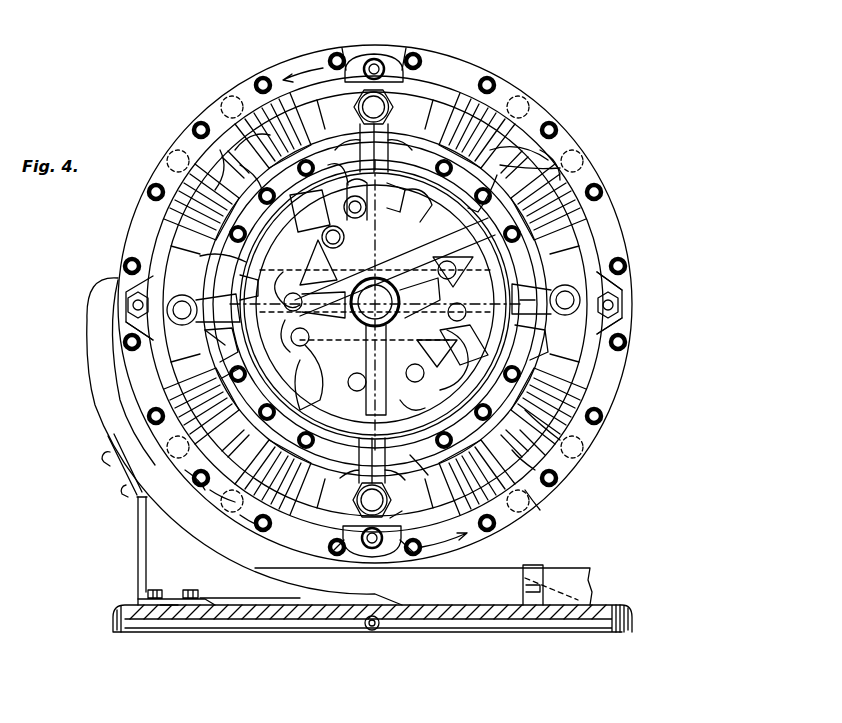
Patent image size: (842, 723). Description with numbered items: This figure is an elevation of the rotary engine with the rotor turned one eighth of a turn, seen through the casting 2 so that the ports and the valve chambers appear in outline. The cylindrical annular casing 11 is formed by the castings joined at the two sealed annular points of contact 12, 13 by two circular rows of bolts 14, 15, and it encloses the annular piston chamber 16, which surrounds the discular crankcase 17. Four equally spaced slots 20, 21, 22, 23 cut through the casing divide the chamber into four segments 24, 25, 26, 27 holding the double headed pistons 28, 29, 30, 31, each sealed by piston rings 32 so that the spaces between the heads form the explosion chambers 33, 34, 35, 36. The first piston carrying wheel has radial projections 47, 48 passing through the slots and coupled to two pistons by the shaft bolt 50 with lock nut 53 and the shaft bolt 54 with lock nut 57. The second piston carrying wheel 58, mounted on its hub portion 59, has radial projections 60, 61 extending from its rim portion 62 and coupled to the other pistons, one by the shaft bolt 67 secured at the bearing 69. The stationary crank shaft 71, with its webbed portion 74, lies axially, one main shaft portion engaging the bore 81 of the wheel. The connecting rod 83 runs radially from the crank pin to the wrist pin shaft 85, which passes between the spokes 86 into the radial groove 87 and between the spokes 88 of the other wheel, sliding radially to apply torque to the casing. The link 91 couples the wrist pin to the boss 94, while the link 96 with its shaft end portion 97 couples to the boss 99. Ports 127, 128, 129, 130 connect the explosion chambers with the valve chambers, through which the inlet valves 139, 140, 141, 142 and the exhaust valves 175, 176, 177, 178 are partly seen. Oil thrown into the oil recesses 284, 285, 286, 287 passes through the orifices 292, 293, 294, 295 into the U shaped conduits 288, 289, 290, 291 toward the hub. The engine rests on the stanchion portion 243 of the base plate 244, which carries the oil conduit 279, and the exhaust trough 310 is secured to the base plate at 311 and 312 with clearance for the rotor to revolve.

The casting 2 is at (618, 398).
The cylindrical annular casing 11 is at (612, 202).
The annular point of contact 12 is at (466, 268).
The annular point of contact 13 is at (618, 226).
The bolts 14 is at (286, 402).
The bolts 15 is at (626, 344).
The annular piston chamber 16 is at (612, 356).
The crankcase 17 is at (240, 272).
The slot 20 is at (409, 148).
The slot 21 is at (218, 338).
The slot 22 is at (348, 462).
The slot 23 is at (536, 356).
The segment 24 is at (322, 148).
The segment 25 is at (220, 374).
The segment 26 is at (427, 460).
The segment 27 is at (532, 240).
The double headed piston 28 is at (428, 106).
The double headed piston 29 is at (170, 348).
The double headed piston 30 is at (313, 512).
The double headed piston 31 is at (580, 360).
The piston rings 32 is at (574, 408).
The explosion chamber 33 is at (252, 118).
The explosion chamber 34 is at (170, 474).
The explosion chamber 35 is at (545, 512).
The explosion chamber 36 is at (560, 166).
The radial projection 47 is at (352, 150).
The radial projection 48 is at (388, 468).
The shaft bolt 50 is at (378, 125).
The lock nut 53 is at (360, 101).
The shaft bolt 54 is at (372, 498).
The lock nut 57 is at (397, 511).
The piston carrying wheel 58 is at (471, 279).
The hub portion 59 is at (408, 295).
The radial projection 60 is at (205, 340).
The radial projection 61 is at (538, 262).
The rim portion 62 is at (460, 356).
The shaft bolt 67 is at (565, 286).
The bearing 69 is at (182, 300).
The stationary crank shaft 71 is at (378, 336).
The webbed portion 74 is at (375, 302).
The bore 81 is at (345, 312).
The connecting rod 83 is at (432, 245).
The wrist pin shaft 85 is at (344, 208).
The spokes 86 is at (422, 222).
The radial groove 87 is at (348, 186).
The spokes 88 is at (318, 224).
The link 91 is at (400, 212).
The boss 94 is at (445, 276).
The link 96 is at (322, 238).
The shaft end portion 97 is at (310, 252).
The boss 99 is at (289, 267).
The port 127 is at (240, 150).
The port 128 is at (242, 517).
The port 129 is at (556, 458).
The port 130 is at (567, 146).
The inlet valve 139 is at (242, 166).
The inlet valve 140 is at (192, 474).
The inlet valve 141 is at (562, 440).
The inlet valve 142 is at (497, 175).
The exhaust valve 175 is at (222, 150).
The exhaust valve 176 is at (215, 492).
The exhaust valve 177 is at (548, 470).
The exhaust valve 178 is at (552, 162).
The stanchion portion 243 is at (222, 575).
The base plate 244 is at (494, 632).
The conduit 279 is at (374, 631).
The oil recess 284 is at (360, 57).
The oil recess 285 is at (132, 330).
The oil recess 286 is at (358, 548).
The oil recess 287 is at (614, 318).
The U shaped conduit 288 is at (390, 57).
The U shaped conduit 289 is at (124, 292).
The U shaped conduit 290 is at (388, 548).
The U shaped conduit 291 is at (618, 294).
The orifice 292 is at (376, 55).
The orifice 293 is at (127, 308).
The orifice 294 is at (372, 557).
The orifice 295 is at (622, 304).
The exhaust trough 310 is at (266, 562).
The securing point 311 is at (547, 606).
The securing point 312 is at (169, 607).